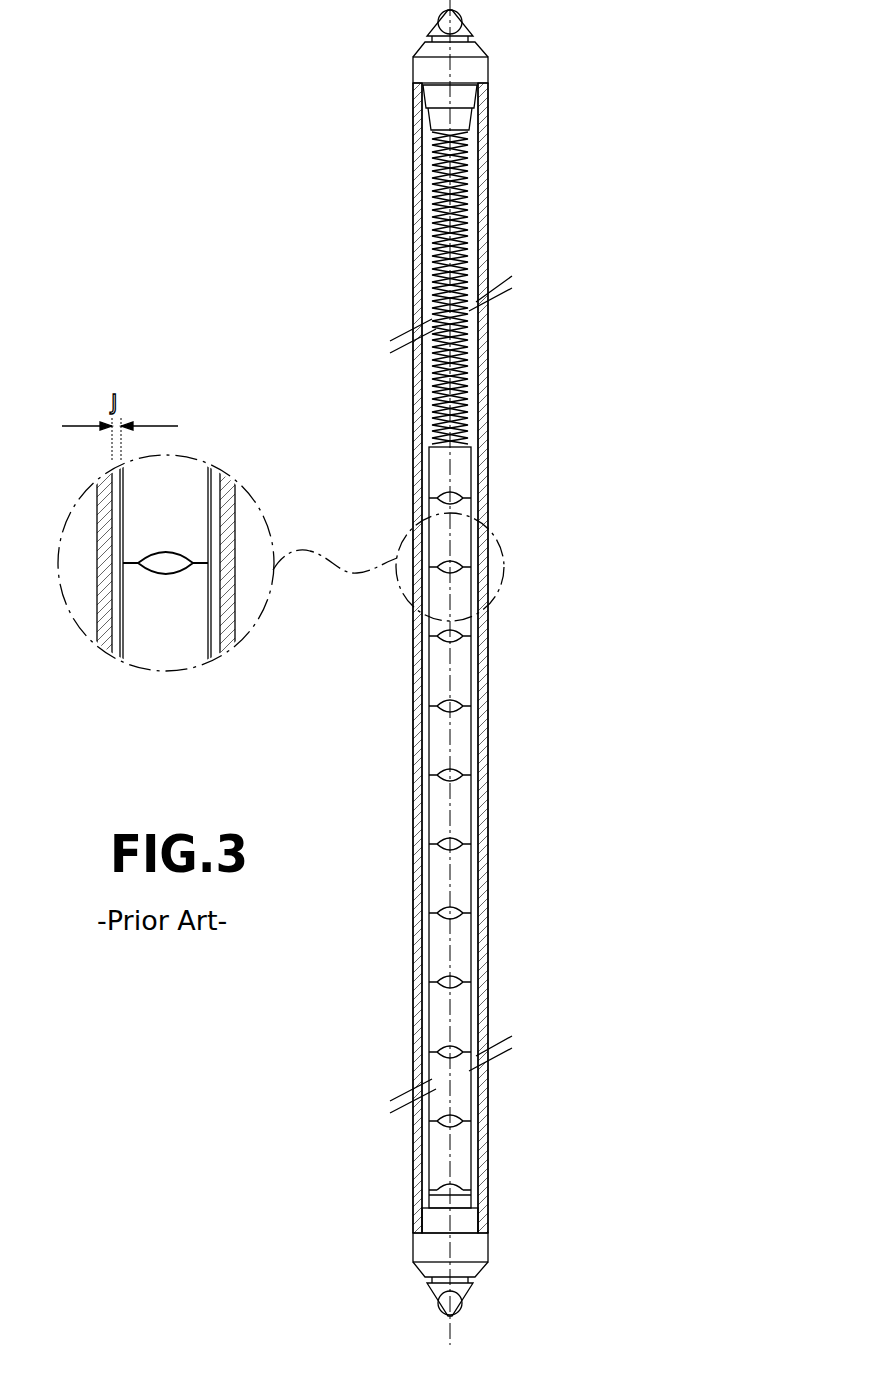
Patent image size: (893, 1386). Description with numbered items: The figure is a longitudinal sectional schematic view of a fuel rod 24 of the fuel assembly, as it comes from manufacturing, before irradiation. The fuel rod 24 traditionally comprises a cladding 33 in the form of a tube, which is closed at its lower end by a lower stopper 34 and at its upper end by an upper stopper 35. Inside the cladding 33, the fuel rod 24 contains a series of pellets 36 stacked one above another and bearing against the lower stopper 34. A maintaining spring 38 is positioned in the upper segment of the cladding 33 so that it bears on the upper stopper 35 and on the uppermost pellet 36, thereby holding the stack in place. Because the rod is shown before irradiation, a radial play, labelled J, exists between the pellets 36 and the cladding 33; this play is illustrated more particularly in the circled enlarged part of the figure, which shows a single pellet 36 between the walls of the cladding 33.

The fuel rod 24 is at (498, 480).
The cladding 33 is at (483, 890).
The lower stopper 34 is at (471, 1252).
The upper stopper 35 is at (471, 73).
The pellets 36 is at (462, 752).
The maintaining spring 38 is at (468, 258).